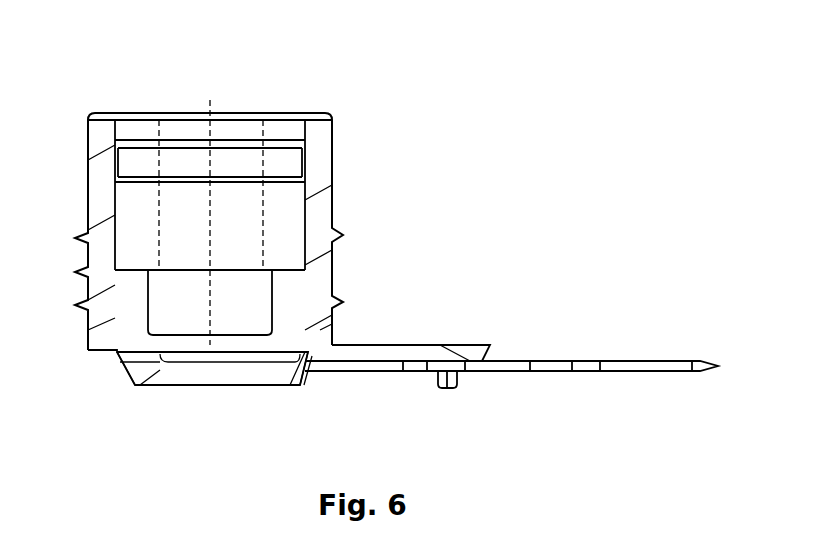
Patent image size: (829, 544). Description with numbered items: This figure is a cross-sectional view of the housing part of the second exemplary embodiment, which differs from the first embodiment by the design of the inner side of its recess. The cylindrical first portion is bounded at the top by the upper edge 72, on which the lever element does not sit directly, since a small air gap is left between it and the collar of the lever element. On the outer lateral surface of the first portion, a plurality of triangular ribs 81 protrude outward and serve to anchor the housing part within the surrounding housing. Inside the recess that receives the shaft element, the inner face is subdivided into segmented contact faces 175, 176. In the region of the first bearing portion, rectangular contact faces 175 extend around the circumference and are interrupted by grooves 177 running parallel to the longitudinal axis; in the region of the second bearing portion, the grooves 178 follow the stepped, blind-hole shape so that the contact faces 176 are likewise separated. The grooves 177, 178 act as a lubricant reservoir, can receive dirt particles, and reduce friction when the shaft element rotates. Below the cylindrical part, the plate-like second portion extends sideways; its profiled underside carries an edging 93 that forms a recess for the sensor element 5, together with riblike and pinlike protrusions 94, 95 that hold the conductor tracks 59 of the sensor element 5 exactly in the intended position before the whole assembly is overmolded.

The sensor element 5 is at (216, 411).
The conductor tracks 59 is at (511, 416).
The upper edge 72 is at (292, 184).
The triangular ribs 81 is at (337, 240).
The edging 93 is at (128, 378).
The riblike protrusions 94 is at (322, 375).
The pinlike protrusions 95 is at (457, 388).
The contact faces 175 is at (320, 203).
The grooves 177 is at (303, 167).
The contact faces 176 is at (324, 280).
The grooves 178 is at (276, 287).